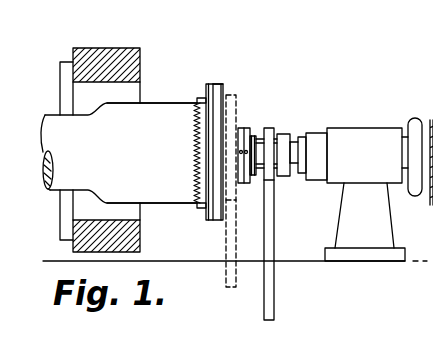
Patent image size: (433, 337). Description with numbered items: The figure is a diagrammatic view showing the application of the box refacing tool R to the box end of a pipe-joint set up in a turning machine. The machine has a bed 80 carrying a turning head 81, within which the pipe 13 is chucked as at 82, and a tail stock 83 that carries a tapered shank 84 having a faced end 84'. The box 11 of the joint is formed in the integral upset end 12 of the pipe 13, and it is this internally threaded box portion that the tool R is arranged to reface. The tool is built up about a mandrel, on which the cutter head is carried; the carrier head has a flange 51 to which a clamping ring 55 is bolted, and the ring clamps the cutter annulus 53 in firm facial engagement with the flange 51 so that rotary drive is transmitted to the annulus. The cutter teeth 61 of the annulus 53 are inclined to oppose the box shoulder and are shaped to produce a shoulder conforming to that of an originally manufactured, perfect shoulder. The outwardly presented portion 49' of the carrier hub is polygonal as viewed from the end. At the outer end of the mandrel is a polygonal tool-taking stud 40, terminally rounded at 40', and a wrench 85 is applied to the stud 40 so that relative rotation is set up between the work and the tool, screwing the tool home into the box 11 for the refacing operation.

The box 11 is at (167, 101).
The upset end 12 is at (152, 153).
The pipe 13 is at (58, 152).
The cutter teeth 61 is at (196, 170).
The cutter annulus 53 is at (206, 85).
The clamping ring 55 is at (215, 84).
The flange 51 is at (227, 94).
The box refacing tool R is at (247, 80).
The outwardly presented hub portion 49' is at (262, 133).
The tool-taking stud 40 is at (281, 139).
The rounded stud end 40' is at (297, 174).
The wrench 85 is at (273, 302).
The tapered shank 84 is at (326, 141).
The faced end 84' is at (327, 127).
The tail stock 83 is at (362, 143).
The bed 80 is at (303, 262).
The turning head 81 is at (125, 50).
The chuck 82 is at (62, 62).